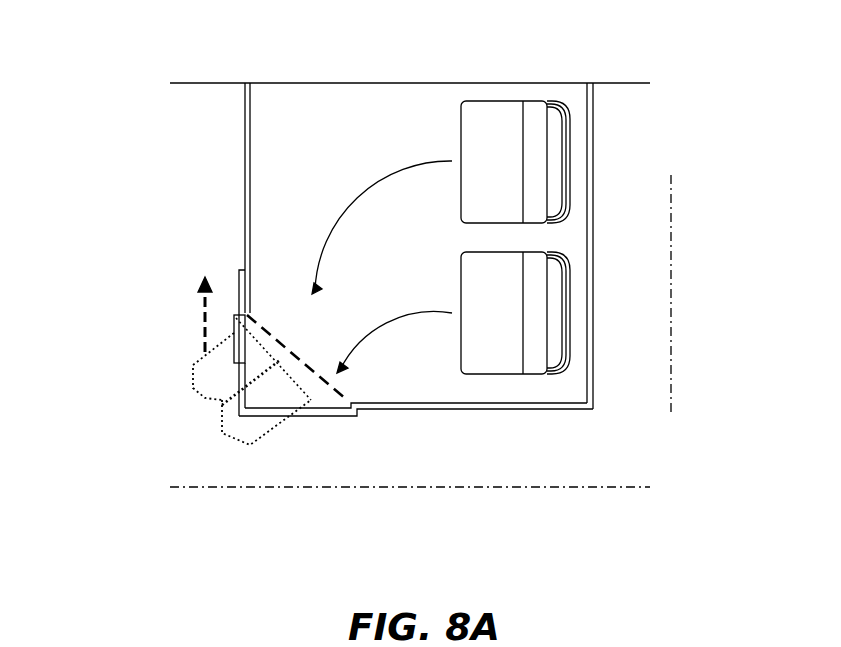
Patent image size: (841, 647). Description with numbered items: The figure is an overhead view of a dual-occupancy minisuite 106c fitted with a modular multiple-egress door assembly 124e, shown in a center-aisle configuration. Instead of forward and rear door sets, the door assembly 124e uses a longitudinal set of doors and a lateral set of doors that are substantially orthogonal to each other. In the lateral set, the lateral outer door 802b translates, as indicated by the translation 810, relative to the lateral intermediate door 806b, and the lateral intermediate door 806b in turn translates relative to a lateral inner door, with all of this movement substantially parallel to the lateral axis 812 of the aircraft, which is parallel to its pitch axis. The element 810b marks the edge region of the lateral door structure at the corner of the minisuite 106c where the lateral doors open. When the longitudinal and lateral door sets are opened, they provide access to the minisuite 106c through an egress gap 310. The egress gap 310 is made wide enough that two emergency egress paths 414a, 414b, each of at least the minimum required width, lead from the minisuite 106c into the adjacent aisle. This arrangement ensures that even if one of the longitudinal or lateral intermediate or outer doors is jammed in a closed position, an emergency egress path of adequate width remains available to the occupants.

The modular multiple-egress door assembly 124e is at (83, 64).
The dual-occupancy minisuite 106c is at (593, 208).
The lateral axis 812 is at (672, 350).
The door opening edge 810b is at (245, 252).
The lateral intermediate door 806b is at (240, 280).
The translation of lateral outer door 810 is at (203, 313).
The lateral outer door 802b is at (240, 372).
The emergency egress path 414a is at (215, 386).
The emergency egress path 414b is at (248, 427).
The egress gap 310 is at (345, 400).